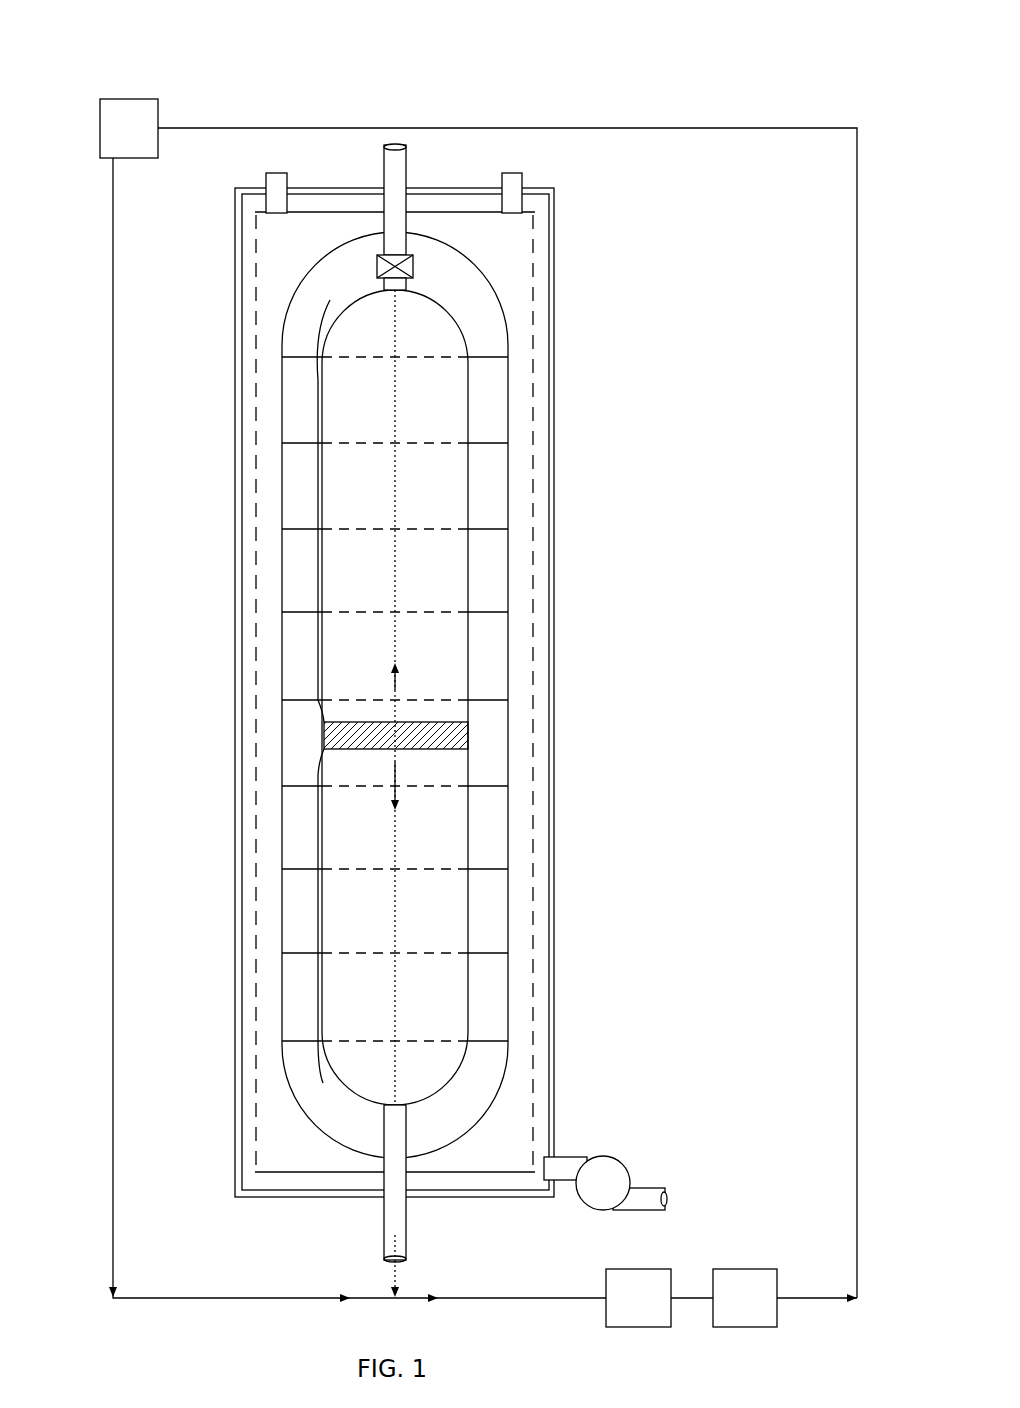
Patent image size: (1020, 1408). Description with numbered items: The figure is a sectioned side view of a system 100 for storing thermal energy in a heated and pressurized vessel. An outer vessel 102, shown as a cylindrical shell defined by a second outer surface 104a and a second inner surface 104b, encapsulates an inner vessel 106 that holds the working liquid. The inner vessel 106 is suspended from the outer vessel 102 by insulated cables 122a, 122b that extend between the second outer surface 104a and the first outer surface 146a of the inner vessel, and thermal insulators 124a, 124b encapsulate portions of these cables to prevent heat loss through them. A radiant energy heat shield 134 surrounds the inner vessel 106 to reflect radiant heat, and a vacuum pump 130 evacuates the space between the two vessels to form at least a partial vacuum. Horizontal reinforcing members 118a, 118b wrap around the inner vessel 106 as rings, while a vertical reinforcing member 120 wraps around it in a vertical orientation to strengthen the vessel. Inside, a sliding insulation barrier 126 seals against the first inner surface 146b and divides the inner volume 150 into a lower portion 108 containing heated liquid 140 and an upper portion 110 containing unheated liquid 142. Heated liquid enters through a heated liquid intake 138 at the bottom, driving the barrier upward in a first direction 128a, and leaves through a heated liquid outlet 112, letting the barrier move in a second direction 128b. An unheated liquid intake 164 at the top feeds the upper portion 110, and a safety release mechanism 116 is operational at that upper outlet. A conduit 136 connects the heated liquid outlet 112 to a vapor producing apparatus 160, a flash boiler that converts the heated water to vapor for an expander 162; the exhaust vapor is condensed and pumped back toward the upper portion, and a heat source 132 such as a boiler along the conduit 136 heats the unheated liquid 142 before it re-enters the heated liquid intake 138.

The system 100 is at (100, 40).
The outer vessel 102 is at (568, 580).
The second outer surface 104a is at (568, 518).
The second inner surface 104b is at (540, 553).
The inner vessel 106 is at (480, 322).
The lower portion 108 is at (309, 910).
The upper portion 110 is at (309, 495).
The heated liquid outlet 112 is at (400, 1280).
The safety release mechanism 116 is at (412, 266).
The horizontal reinforcing member 118a is at (503, 438).
The horizontal reinforcing member 118b is at (435, 870).
The vertical reinforcing member 120 is at (397, 985).
The insulated cable 122a is at (268, 254).
The insulated cable 122b is at (535, 222).
The thermal insulator 124a is at (265, 204).
The thermal insulator 124b is at (501, 185).
The sliding insulation barrier 126 is at (455, 736).
The first direction 128a is at (395, 690).
The second direction 128b is at (395, 762).
The vacuum pump 130 is at (612, 1174).
The heat source 132 is at (133, 158).
The radiant energy heat shield 134 is at (533, 492).
The conduit 136 is at (856, 405).
The heated liquid intake 138 is at (383, 1243).
The heated liquid 140 is at (452, 820).
The unheated liquid 142 is at (458, 662).
The first outer surface 146a is at (481, 373).
The first inner surface 146b is at (456, 390).
The inner volume 150 is at (385, 855).
The vapor producing apparatus 160 is at (658, 1310).
The expander 162 is at (766, 1310).
The unheated liquid intake 164 is at (383, 182).